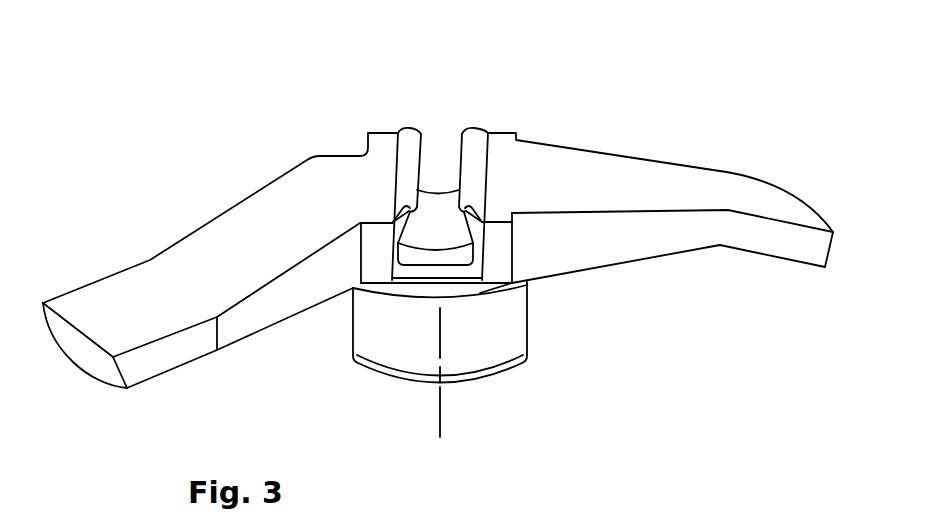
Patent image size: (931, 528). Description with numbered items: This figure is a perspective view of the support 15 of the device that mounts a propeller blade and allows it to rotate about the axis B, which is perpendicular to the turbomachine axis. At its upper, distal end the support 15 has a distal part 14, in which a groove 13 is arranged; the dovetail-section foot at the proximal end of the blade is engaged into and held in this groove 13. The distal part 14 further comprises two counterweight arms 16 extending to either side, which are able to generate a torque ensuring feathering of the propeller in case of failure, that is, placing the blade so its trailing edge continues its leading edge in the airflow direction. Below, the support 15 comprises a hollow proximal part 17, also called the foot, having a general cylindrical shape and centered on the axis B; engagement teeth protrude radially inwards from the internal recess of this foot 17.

The groove 13 is at (440, 144).
The distal part 14 is at (385, 160).
The support 15 is at (438, 252).
The blade 16 is at (223, 245).
The proximal part 17 is at (485, 332).
The axis B is at (440, 401).